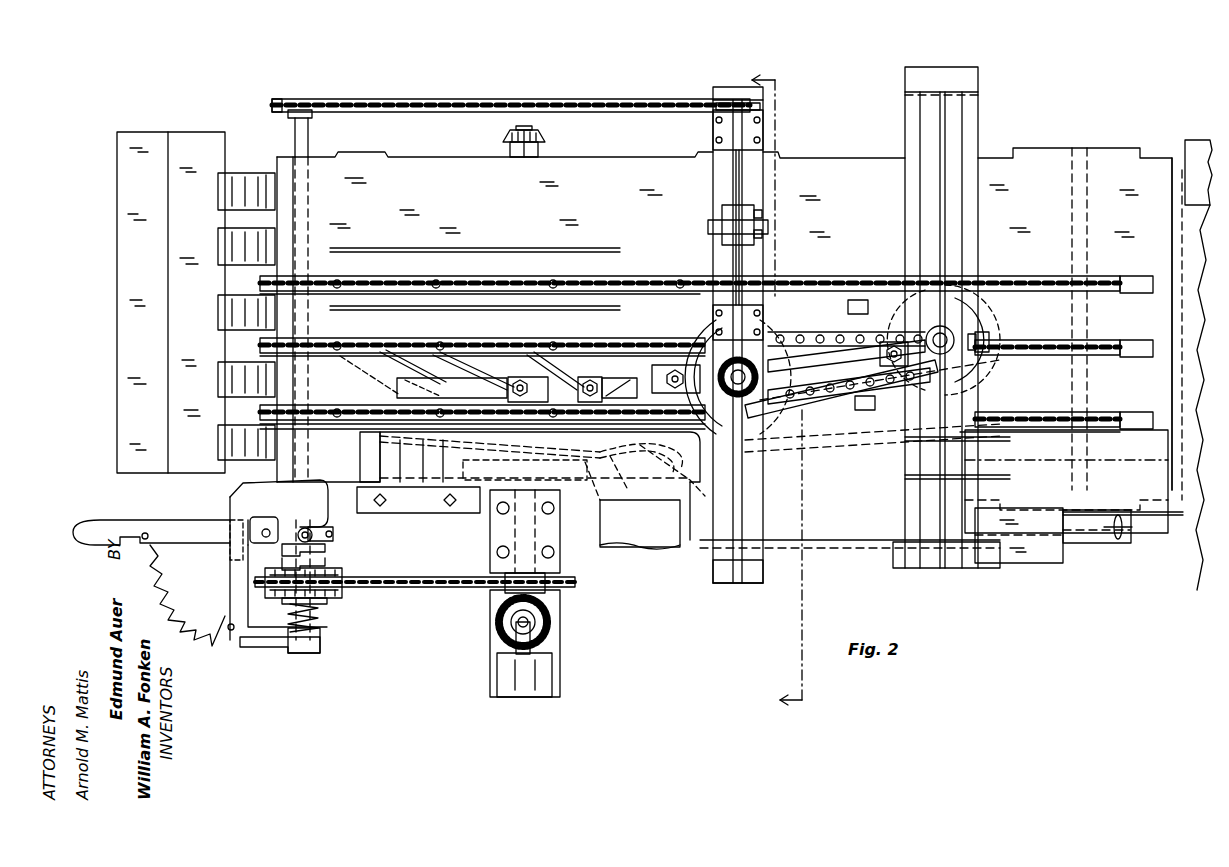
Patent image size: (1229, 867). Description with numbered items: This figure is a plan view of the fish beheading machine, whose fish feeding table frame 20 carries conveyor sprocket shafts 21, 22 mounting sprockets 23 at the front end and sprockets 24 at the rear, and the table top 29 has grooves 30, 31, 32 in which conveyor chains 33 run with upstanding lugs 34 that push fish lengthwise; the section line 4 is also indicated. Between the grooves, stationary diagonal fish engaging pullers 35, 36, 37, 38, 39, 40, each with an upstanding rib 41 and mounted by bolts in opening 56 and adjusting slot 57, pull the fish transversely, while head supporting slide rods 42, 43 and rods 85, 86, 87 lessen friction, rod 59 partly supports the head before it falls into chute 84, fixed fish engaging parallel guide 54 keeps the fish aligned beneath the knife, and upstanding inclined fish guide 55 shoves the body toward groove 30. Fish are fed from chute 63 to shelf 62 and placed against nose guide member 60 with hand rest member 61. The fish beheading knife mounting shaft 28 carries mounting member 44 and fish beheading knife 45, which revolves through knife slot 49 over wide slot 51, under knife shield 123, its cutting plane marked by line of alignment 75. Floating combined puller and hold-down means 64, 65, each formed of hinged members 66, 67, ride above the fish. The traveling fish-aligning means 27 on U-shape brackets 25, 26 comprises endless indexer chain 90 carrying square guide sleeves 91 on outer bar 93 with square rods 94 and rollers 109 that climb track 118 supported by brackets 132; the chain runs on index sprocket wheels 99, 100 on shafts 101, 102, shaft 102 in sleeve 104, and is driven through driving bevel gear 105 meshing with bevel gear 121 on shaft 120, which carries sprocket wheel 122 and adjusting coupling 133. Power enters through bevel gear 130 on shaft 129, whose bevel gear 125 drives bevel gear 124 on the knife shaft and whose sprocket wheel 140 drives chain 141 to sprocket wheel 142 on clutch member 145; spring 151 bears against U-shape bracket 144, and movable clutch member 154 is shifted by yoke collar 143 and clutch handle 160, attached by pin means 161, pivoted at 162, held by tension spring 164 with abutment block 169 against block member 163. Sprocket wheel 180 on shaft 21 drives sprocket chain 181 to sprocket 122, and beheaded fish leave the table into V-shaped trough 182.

The section line 4- 4 is at (777, 400).
The fish feeding table frame 20 is at (880, 160).
The conveyor sprocket shaft 21 is at (312, 142).
The conveyor sprocket shaft 22 is at (1088, 172).
The sprockets 23 is at (1115, 343).
The sprockets 24 is at (262, 288).
The U-shape bracket 25 is at (727, 580).
The U-shape bracket 26 is at (955, 570).
The traveling fish-aligning means 27 is at (828, 300).
The fish beheading knife mounting shaft 28 is at (495, 530).
The table top 29 is at (832, 168).
The groove 30 is at (1148, 420).
The groove 31 is at (1140, 350).
The groove 32 is at (1135, 290).
The conveyor chains 33 is at (808, 275).
The upstanding lugs 34 is at (350, 292).
The stationary diagonal fish engaging puller 35 is at (960, 398).
The stationary diagonal fish engaging puller 36 is at (905, 420).
The stationary diagonal fish engaging puller 37 is at (835, 430).
The stationary diagonal fish engaging puller 38 is at (562, 352).
The stationary diagonal fish engaging puller 39 is at (472, 352).
The stationary diagonal fish engaging puller 40 is at (385, 380).
The upstanding rib 41 is at (372, 372).
The head supporting slide rod 42 is at (975, 478).
The head supporting slide rod 43 is at (1012, 440).
The fish beheading knife mounting member 44 is at (546, 462).
The fish beheading knife 45 is at (596, 462).
The fish beheading knife slot 49 is at (625, 470).
The wide slot 51 is at (600, 470).
The fixed fish engaging parallel guide 54 is at (660, 385).
The upstanding inclined fish guide 55 is at (428, 445).
The opening 56 is at (884, 350).
The adjusting slot 57 is at (420, 374).
The rod 59 is at (652, 508).
The nose guide member 60 is at (1150, 512).
The hand rest member 61 is at (1050, 563).
The shelf 62 is at (1172, 250).
The chute 63 is at (1185, 146).
The combined puller and hold-down means 64 is at (978, 362).
The combined puller and hold-down means 65 is at (594, 380).
The member 66 is at (614, 376).
The member 67 is at (436, 390).
The line of alignment 75 is at (1050, 456).
The chute 84 is at (636, 550).
The rod 85 is at (300, 432).
The rod 86 is at (532, 292).
The rod 87 is at (580, 248).
The endless indexer chain 90 is at (830, 334).
The square guide sleeve 91 is at (892, 300).
The outer bar 93 is at (828, 462).
The square rod 94 is at (890, 300).
The index sprocket wheel 99 is at (795, 288).
The index sprocket wheel 100 is at (958, 300).
The shaft 101 is at (678, 292).
The shaft 102 is at (972, 318).
The sleeve 104 is at (978, 320).
The driving bevel gear 105 is at (684, 300).
The roller 109 is at (857, 300).
The track 118 is at (1000, 312).
The shaft 120 is at (745, 178).
The bevel gear 121 is at (703, 296).
The sprocket wheel 122 is at (765, 112).
The knife shield 123 is at (378, 455).
The bevel gear 124 is at (547, 607).
The bevel gear 125 is at (500, 634).
The shaft 129 is at (522, 126).
The bevel gear 130 is at (542, 136).
The brackets 132 is at (690, 352).
The adjusting coupling 133 is at (720, 228).
The sprocket wheel 140 is at (497, 588).
The chain 141 is at (452, 590).
The sprocket wheel 142 is at (340, 592).
The separable section yoke collar 143 is at (336, 536).
The U-shape bracket 144 is at (238, 646).
The clutch member 145 is at (330, 566).
The spring 151 is at (322, 630).
The movable clutch member 154 is at (327, 553).
The clutch handle 160 is at (168, 530).
The pin means 161 is at (325, 518).
The pivot 162 is at (265, 526).
The block member 163 is at (232, 552).
The tension spring 164 is at (224, 620).
The abutment block 169 is at (230, 532).
The sprocket wheel 180 is at (296, 90).
The sprocket chain 181 is at (378, 90).
The V-shaped trough 182 is at (186, 140).